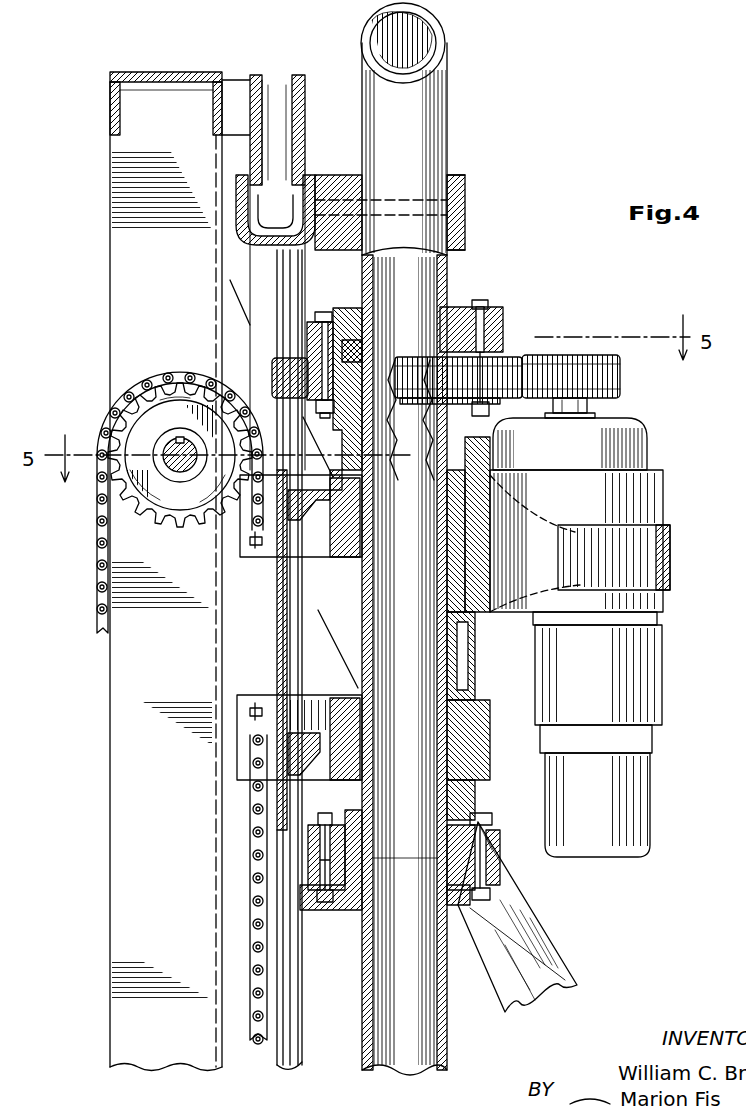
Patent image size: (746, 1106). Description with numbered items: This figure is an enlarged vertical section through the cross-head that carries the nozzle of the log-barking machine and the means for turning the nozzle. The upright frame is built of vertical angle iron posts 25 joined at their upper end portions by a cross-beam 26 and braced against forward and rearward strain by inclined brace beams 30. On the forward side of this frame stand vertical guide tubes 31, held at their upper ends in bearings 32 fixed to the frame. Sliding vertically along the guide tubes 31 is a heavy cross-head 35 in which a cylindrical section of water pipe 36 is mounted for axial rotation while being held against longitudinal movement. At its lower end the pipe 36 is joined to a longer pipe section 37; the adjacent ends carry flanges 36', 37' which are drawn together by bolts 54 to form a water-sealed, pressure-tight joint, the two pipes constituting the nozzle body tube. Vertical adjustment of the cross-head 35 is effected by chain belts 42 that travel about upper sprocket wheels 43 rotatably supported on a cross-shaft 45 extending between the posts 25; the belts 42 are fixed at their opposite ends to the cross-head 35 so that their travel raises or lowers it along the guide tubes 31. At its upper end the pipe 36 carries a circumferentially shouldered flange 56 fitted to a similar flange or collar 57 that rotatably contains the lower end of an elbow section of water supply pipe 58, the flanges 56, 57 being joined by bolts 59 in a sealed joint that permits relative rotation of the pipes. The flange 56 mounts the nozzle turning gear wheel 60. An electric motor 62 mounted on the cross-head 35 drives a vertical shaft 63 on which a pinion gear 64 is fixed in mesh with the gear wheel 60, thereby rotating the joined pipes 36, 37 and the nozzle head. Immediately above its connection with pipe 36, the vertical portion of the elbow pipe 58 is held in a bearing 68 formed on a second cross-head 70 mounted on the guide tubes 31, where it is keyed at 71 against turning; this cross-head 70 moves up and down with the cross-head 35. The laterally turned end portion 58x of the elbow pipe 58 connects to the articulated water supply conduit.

The vertical angle iron post 25 is at (115, 232).
The cross-beam 26 is at (130, 72).
The brace beam 30 is at (577, 965).
The guide tube 31 is at (276, 1068).
The bearing 32 is at (300, 110).
The cross-head 35 is at (472, 535).
The cylindrical section of water pipe 36 is at (380, 716).
The flange 36' is at (520, 856).
The pipe section 37 is at (430, 665).
The flange 37' is at (456, 871).
The chain belt 42 is at (97, 596).
The sprocket wheel 43 is at (130, 497).
The cross-shaft 45 is at (183, 472).
The bolt 54 is at (318, 857).
The flange 56 is at (275, 380).
The flange or collar 57 is at (310, 330).
The elbow section of water supply pipe 58 is at (430, 145).
The laterally turned end portion 58x is at (447, 35).
The bolt 59 is at (495, 340).
The nozzle turning gear wheel 60 is at (478, 370).
The electric motor 62 is at (595, 455).
The vertical shaft 63 is at (600, 405).
The pinion gear 64 is at (592, 362).
The bearing 68 is at (455, 210).
The cross-head 70 is at (325, 175).
The key 71 is at (465, 237).